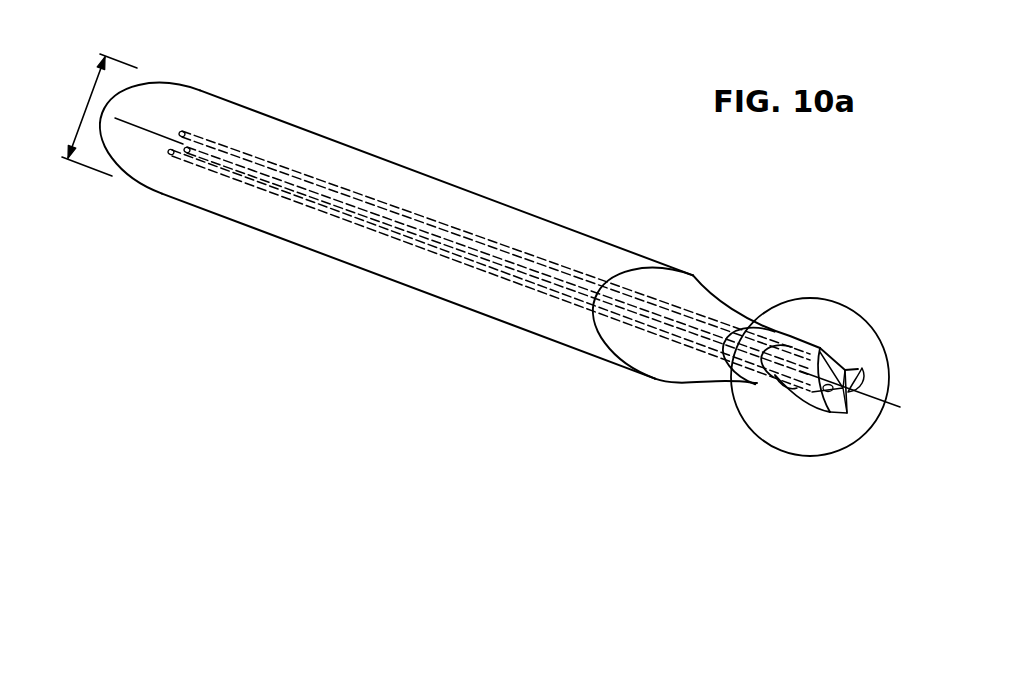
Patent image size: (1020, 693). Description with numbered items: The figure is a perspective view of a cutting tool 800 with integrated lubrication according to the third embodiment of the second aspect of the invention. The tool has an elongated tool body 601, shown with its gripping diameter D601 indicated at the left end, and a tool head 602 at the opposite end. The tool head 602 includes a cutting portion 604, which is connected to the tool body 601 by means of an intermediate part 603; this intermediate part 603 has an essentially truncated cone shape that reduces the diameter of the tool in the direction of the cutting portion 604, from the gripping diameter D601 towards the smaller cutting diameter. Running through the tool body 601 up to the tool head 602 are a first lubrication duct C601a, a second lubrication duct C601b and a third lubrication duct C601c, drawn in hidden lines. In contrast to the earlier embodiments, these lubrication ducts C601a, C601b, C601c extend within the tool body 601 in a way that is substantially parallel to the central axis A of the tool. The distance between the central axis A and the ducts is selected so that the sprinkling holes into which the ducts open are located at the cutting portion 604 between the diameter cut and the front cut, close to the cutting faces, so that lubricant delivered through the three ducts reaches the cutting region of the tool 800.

The cutting tool 800 is at (573, 192).
The tool body 601 is at (460, 188).
The tool head 602 is at (795, 466).
The intermediate part 603 is at (810, 283).
The cutting portion 604 is at (884, 311).
The first lubrication duct C601a is at (182, 131).
The second lubrication duct C601b is at (187, 149).
The third lubrication duct C601c is at (170, 152).
The gripping diameter D601 is at (77, 115).
The central axis A is at (521, 287).